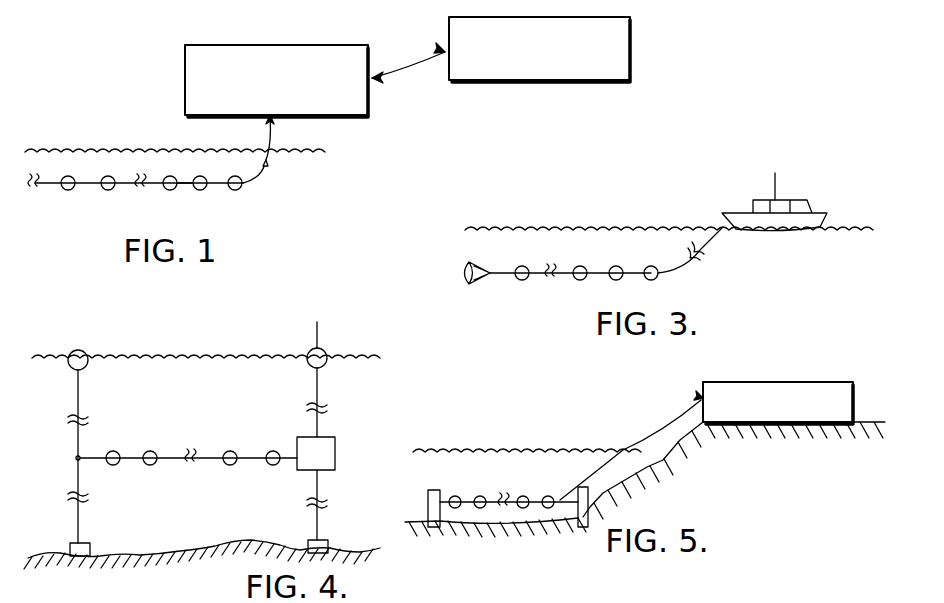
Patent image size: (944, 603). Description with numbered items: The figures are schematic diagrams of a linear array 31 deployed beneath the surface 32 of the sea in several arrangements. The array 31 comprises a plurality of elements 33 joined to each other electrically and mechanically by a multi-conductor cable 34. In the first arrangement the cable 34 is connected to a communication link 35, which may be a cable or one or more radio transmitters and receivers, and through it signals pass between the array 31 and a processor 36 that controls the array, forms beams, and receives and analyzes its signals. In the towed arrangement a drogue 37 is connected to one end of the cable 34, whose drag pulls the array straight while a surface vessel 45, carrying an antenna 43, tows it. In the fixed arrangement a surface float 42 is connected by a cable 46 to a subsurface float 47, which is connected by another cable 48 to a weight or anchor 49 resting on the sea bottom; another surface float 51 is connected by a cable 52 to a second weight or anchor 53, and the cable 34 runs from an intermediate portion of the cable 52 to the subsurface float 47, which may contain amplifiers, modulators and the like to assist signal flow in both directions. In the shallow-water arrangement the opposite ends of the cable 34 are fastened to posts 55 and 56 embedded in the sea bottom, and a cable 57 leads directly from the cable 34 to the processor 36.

In FIG. 1, the linear array 31 is at (198, 173).
In FIG. 3, the linear array 31 is at (613, 258).
In FIG. 4, the linear array 31 is at (154, 428).
In FIG. 5, the linear array 31 is at (519, 474).
In FIG. 1, the surface of the sea 32 is at (107, 152).
In FIG. 3, the surface of the sea 32 is at (606, 228).
In FIG. 4, the surface of the sea 32 is at (173, 358).
In FIG. 5, the surface of the sea 32 is at (510, 452).
In FIG. 1, the elements 33 is at (66, 190).
In FIG. 3, the elements 33 is at (558, 286).
In FIG. 4, the elements 33 is at (112, 466).
In FIG. 5, the elements 33 is at (456, 495).
In FIG. 1, the multi-conductor cable 34 is at (190, 186).
In FIG. 3, the multi-conductor cable 34 is at (662, 283).
In FIG. 4, the multi-conductor cable 34 is at (157, 466).
In FIG. 5, the multi-conductor cable 34 is at (474, 497).
In FIG. 1, the communication link 35 is at (185, 73).
In FIG. 1, the processor 36 is at (632, 38).
In FIG. 5, the processor 36 is at (702, 390).
In FIG. 3, the drogue 37 is at (487, 264).
In FIG. 4, the surface float 42 is at (327, 352).
In FIG. 3, the antenna 43 is at (776, 193).
In FIG. 4, the antenna 43 is at (319, 332).
In FIG. 3, the surface vessel 45 is at (806, 209).
In FIG. 4, the cable 46 is at (320, 431).
In FIG. 4, the subsurface float 47 is at (337, 457).
In FIG. 4, the cable 48 is at (320, 494).
In FIG. 4, the weight or anchor 49 is at (330, 546).
In FIG. 4, the surface float 51 is at (85, 352).
In FIG. 4, the cable 52 is at (76, 477).
In FIG. 4, the weight or anchor 53 is at (70, 547).
In FIG. 5, the post 55 is at (428, 493).
In FIG. 5, the post 56 is at (590, 494).
In FIG. 5, the cable 57 is at (660, 432).